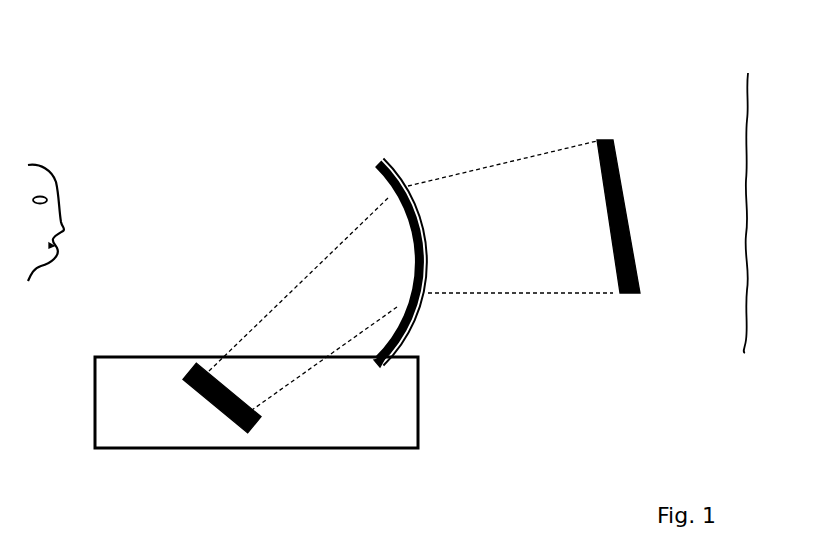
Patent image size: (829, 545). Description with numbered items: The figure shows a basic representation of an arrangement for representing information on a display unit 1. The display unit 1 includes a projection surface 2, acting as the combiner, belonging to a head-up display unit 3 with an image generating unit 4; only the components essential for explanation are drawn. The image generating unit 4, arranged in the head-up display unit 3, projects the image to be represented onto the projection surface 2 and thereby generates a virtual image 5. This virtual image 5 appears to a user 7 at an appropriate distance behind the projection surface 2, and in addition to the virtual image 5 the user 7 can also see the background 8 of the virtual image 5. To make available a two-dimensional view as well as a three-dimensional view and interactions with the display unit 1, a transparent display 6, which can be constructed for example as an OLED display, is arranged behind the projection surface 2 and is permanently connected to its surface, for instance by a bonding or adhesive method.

The display unit 1 is at (771, 104).
The projection surface 2 is at (370, 165).
The head-up display unit 3 is at (412, 415).
The image generating unit 4 is at (252, 428).
The virtual image 5 is at (611, 140).
The transparent display 6 is at (385, 162).
The user 7 is at (66, 173).
The background 8 is at (748, 212).